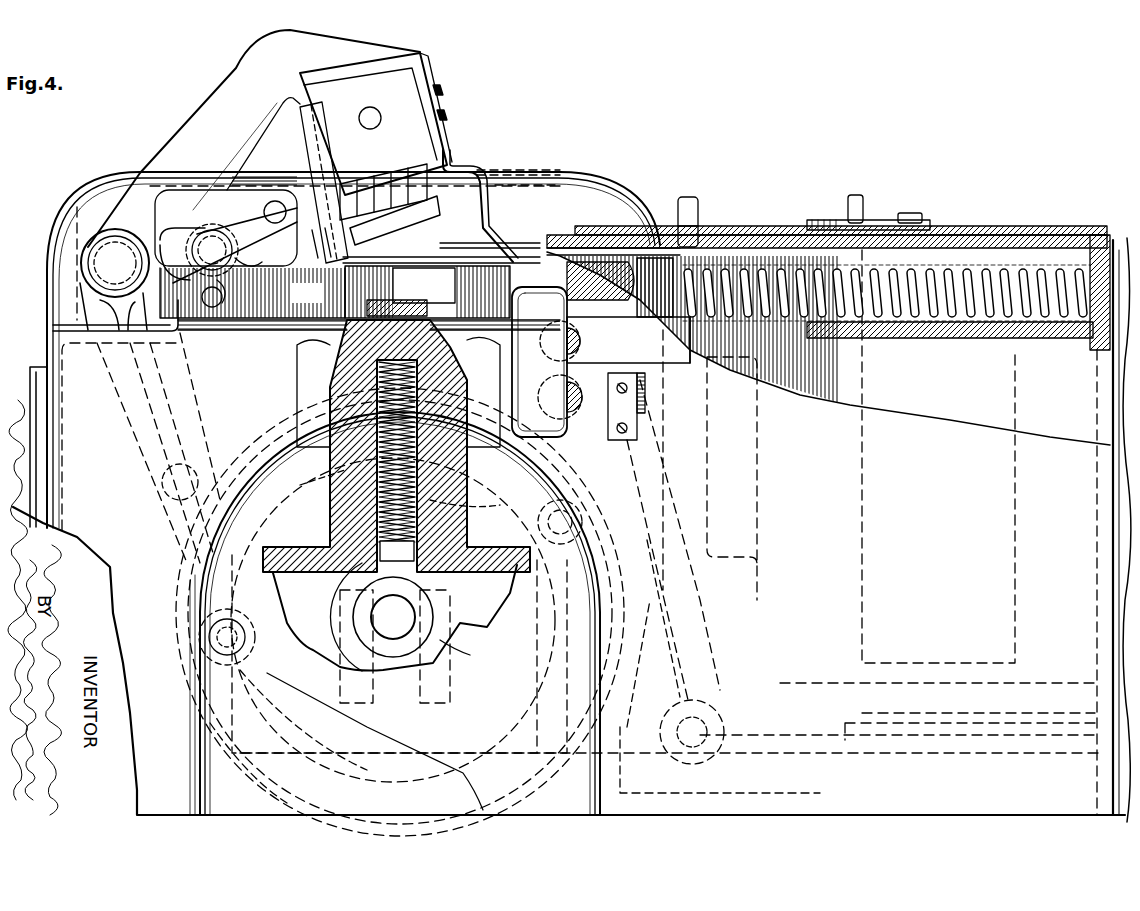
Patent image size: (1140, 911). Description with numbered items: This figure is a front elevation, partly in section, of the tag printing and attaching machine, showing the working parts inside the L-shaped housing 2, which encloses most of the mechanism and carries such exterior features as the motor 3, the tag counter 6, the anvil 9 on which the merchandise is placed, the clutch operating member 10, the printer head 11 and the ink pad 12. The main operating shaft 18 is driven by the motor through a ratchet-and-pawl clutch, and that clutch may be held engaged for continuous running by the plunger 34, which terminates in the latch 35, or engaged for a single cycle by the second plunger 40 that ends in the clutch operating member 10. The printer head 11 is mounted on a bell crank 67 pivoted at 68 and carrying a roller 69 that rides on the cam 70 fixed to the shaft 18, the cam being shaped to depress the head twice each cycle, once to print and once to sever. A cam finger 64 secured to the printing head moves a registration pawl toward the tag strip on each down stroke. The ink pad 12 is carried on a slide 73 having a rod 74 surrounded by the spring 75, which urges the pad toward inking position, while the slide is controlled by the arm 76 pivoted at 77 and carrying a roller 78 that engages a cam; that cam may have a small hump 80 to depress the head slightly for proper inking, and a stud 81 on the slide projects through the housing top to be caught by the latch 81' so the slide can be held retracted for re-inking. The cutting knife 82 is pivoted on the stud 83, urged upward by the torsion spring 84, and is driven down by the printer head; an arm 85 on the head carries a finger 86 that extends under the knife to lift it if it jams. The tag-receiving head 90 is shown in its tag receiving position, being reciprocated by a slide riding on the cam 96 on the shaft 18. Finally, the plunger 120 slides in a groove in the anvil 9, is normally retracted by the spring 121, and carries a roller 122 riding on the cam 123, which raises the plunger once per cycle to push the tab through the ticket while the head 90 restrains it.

The housing 2 is at (670, 532).
The motor 3 is at (762, 528).
The tag counter 6 is at (288, 187).
The anvil 9 is at (340, 372).
The clutch operating member 10 is at (539, 362).
The printer head 11 is at (425, 80).
The ink pad 12 is at (430, 197).
The main operating shaft 18 is at (381, 617).
The plunger 34 is at (582, 341).
The latch 35 is at (690, 368).
The second plunger 40 is at (560, 397).
The cam finger 64 is at (488, 210).
The bell crank 67 is at (254, 138).
The pivot 68 is at (114, 279).
The roller 69 is at (212, 665).
The cam 70 is at (270, 680).
The slide 73 is at (740, 245).
The rod 74 is at (945, 340).
The spring 75 is at (940, 280).
The arm 76 is at (698, 608).
The pivot 77 is at (700, 730).
The roller 78 is at (573, 497).
The hump 80 is at (305, 495).
The stud 81 is at (705, 222).
The latch 81' is at (868, 206).
The cutting knife 82 is at (252, 293).
The stud 83 is at (215, 238).
The torsion spring 84 is at (219, 252).
The arm 85 is at (318, 158).
The finger 86 is at (323, 242).
The head 90 is at (427, 292).
The cam 96 is at (485, 625).
The plunger 120 is at (397, 461).
The spring 121 is at (315, 478).
The roller 122 is at (482, 506).
The cam 123 is at (468, 654).